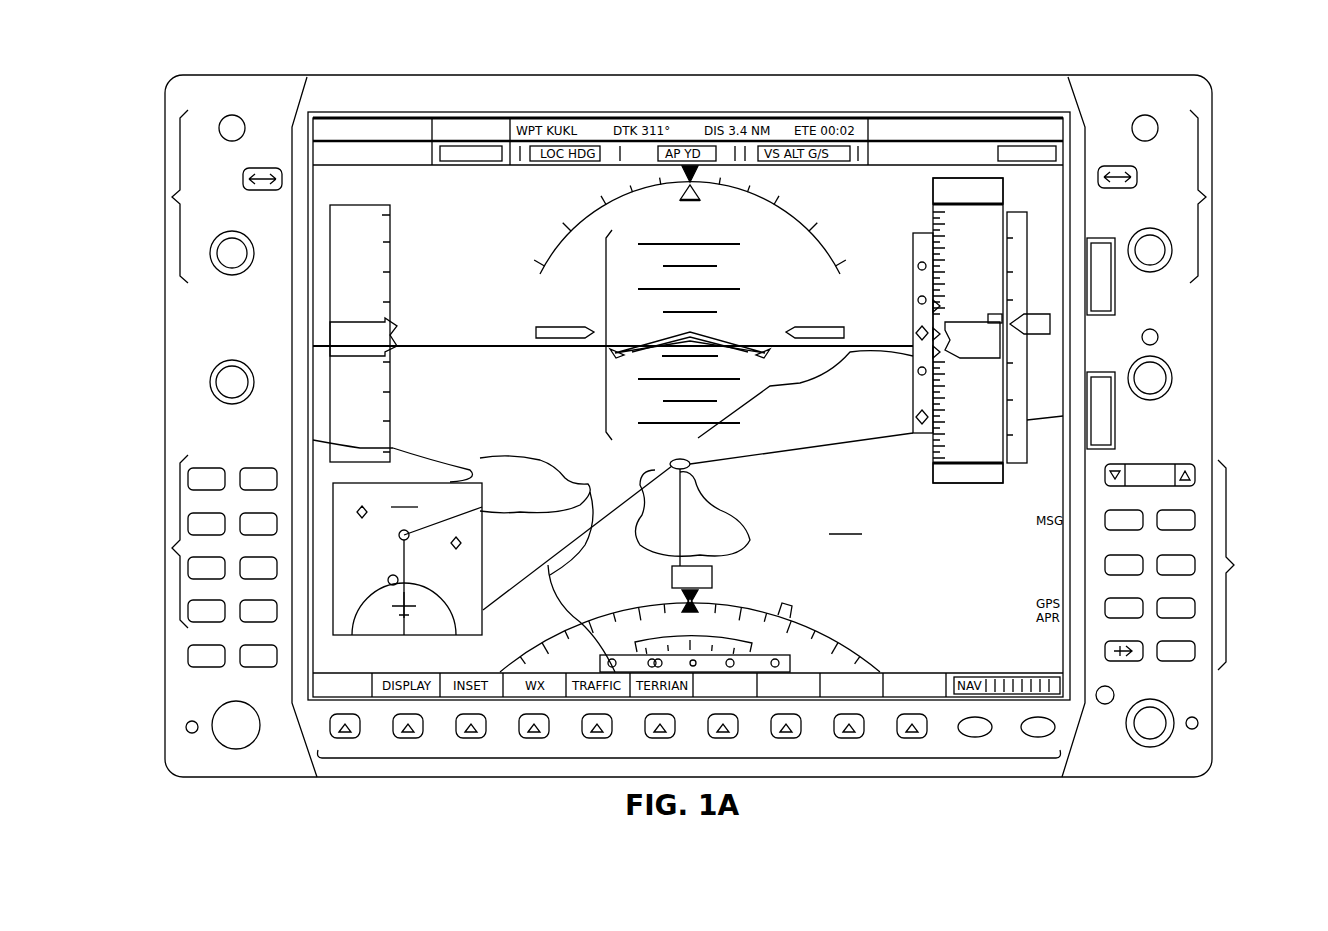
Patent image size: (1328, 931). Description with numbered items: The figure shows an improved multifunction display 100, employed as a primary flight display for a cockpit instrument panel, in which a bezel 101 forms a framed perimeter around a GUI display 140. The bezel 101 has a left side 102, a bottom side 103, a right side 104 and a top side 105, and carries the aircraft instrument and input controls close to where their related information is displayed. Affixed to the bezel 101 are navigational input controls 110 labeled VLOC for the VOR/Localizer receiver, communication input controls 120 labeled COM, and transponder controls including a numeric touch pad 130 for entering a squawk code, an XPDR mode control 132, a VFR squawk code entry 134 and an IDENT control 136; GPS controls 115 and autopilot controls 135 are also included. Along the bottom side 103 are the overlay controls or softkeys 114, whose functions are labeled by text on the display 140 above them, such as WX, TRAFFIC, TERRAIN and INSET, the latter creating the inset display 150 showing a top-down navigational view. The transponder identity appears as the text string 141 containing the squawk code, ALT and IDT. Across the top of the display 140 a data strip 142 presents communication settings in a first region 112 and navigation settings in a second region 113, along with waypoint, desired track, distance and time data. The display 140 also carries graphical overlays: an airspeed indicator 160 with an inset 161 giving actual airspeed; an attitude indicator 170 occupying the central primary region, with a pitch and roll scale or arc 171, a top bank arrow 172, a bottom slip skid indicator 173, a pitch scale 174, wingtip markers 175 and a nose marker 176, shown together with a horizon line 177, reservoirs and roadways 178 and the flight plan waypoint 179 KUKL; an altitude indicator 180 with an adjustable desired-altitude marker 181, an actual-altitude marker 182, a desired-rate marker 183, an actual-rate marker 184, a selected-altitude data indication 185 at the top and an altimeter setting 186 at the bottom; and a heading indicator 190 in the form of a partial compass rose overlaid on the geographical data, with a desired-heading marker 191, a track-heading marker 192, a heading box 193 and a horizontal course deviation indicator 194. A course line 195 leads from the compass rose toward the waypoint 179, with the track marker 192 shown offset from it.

The multifunction display 100 is at (1218, 106).
The bezel 101 is at (866, 80).
The left side 102 is at (209, 443).
The bottom side 103 is at (805, 776).
The right side 104 is at (1185, 428).
The top side 105 is at (718, 74).
The navigational input controls 110 is at (1206, 197).
The first region 112 is at (436, 165).
The second region 113 is at (980, 116).
The overlay controls 114 is at (535, 758).
The GPS controls 115 is at (1168, 705).
The communication input controls 120 is at (172, 197).
The numeric touch pad 130 is at (172, 548).
The XPDR mode control 132 is at (215, 745).
The VFR squawk code entry 134 is at (204, 667).
The autopilot controls 135 is at (1234, 565).
The IDENT control 136 is at (258, 667).
The display 140 is at (688, 511).
The text string 141 is at (600, 660).
The data strip 142 is at (580, 102).
The inset display 150 is at (407, 559).
The airspeed indicator 160 is at (410, 248).
The inset 161 is at (392, 360).
The attitude indicator 170 is at (613, 303).
The pitch and roll scale 171 is at (802, 220).
The top arrow 172 is at (697, 174).
The slip skid indicator 173 is at (690, 204).
The pitch scale 174 is at (604, 378).
The wingtip markers 175 is at (560, 324).
The nose marker 176 is at (738, 342).
The horizon line 177 is at (490, 349).
The reservoirs and roadways 178 is at (605, 506).
The flight plan waypoint 179 is at (668, 465).
The altitude indicator 180 is at (952, 500).
The adjustable display marker 181 is at (913, 303).
The marker 182 is at (916, 360).
The marker 183 is at (1014, 280).
The marker 184 is at (1040, 310).
The data indication 185 is at (930, 190).
The altimeter setting 186 is at (930, 476).
The heading indicator 190 is at (693, 619).
The adjustable marker data display 191 is at (792, 612).
The marker 192 is at (706, 592).
The box 193 is at (670, 576).
The course deviation indicator 194 is at (620, 656).
The course line 195 is at (686, 530).